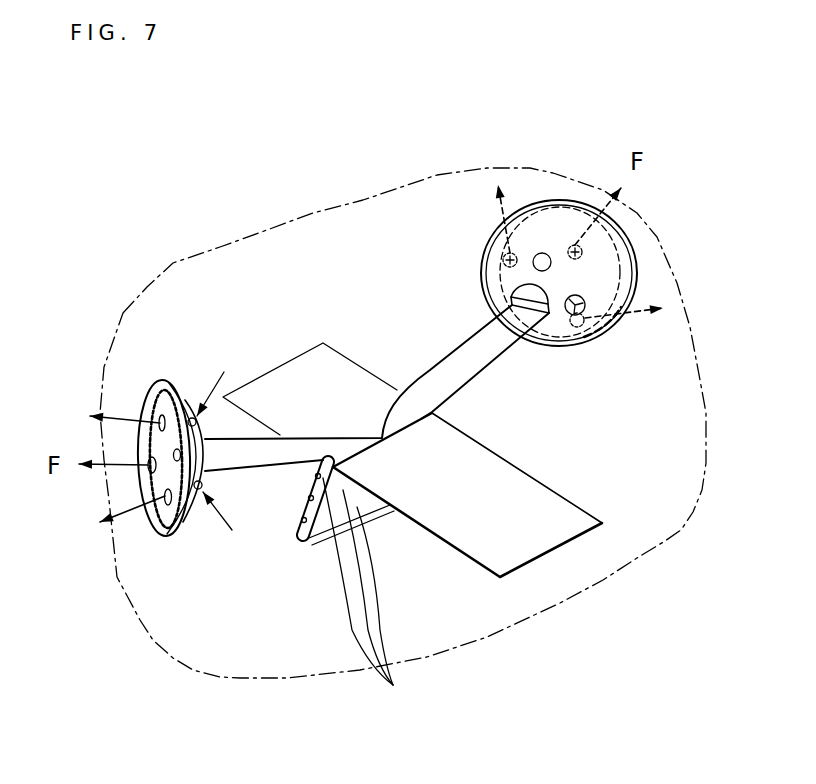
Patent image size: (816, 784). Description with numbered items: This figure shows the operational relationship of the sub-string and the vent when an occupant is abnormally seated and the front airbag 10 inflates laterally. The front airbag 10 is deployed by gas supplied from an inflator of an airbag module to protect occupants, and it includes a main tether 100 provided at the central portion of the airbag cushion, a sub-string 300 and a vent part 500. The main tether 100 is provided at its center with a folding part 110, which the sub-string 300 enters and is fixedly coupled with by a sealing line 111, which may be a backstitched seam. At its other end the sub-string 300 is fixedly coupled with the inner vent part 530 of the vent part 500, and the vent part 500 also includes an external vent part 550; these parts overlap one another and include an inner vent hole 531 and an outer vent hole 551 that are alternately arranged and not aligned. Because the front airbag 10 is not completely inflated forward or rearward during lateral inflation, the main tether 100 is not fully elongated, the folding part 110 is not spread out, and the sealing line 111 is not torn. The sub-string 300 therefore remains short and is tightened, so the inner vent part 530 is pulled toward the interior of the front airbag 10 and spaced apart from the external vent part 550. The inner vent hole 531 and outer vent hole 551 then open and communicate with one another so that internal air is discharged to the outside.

The front airbag 10 is at (432, 171).
The main tether 100 is at (476, 572).
The folding part 110 is at (300, 477).
The sealing line 111 is at (373, 600).
The sub-string 300 is at (302, 427).
The vent part 500 is at (626, 341).
The inner vent part 530 is at (585, 266).
The inner vent hole 531 is at (586, 302).
The external vent part 550 is at (576, 245).
The outer vent hole 551 is at (512, 253).